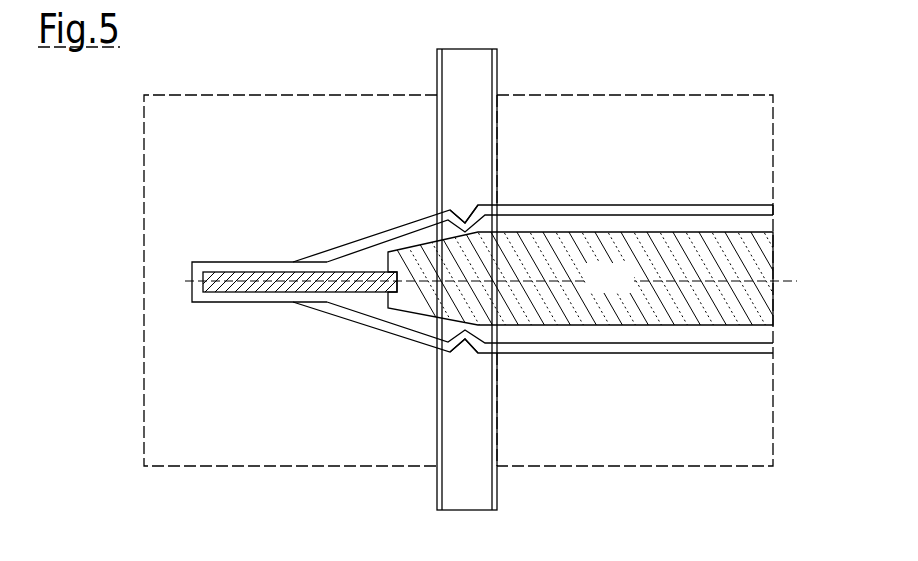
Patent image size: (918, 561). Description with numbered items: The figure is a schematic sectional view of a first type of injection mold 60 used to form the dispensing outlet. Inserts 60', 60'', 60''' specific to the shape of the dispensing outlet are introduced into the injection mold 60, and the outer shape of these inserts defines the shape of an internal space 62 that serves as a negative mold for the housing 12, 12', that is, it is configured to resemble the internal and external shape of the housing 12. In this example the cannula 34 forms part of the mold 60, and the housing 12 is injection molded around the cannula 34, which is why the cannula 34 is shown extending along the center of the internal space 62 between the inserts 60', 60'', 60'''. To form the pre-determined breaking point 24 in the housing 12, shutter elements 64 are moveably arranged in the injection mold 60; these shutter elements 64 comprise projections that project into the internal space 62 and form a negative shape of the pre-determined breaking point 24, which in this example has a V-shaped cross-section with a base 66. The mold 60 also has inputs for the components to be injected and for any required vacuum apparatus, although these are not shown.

The housing 12 is at (609, 186).
The optical fiber 12' is at (580, 278).
The pre-determined breaking point 24 is at (428, 213).
The cannula 34 is at (253, 290).
The injection mold 60 is at (407, 312).
The insert 60' is at (225, 352).
The insert 60'' is at (562, 280).
The insert 60''' is at (610, 277).
The internal space 62 is at (773, 205).
The shutter elements 64 is at (479, 127).
The base 66 is at (466, 216).